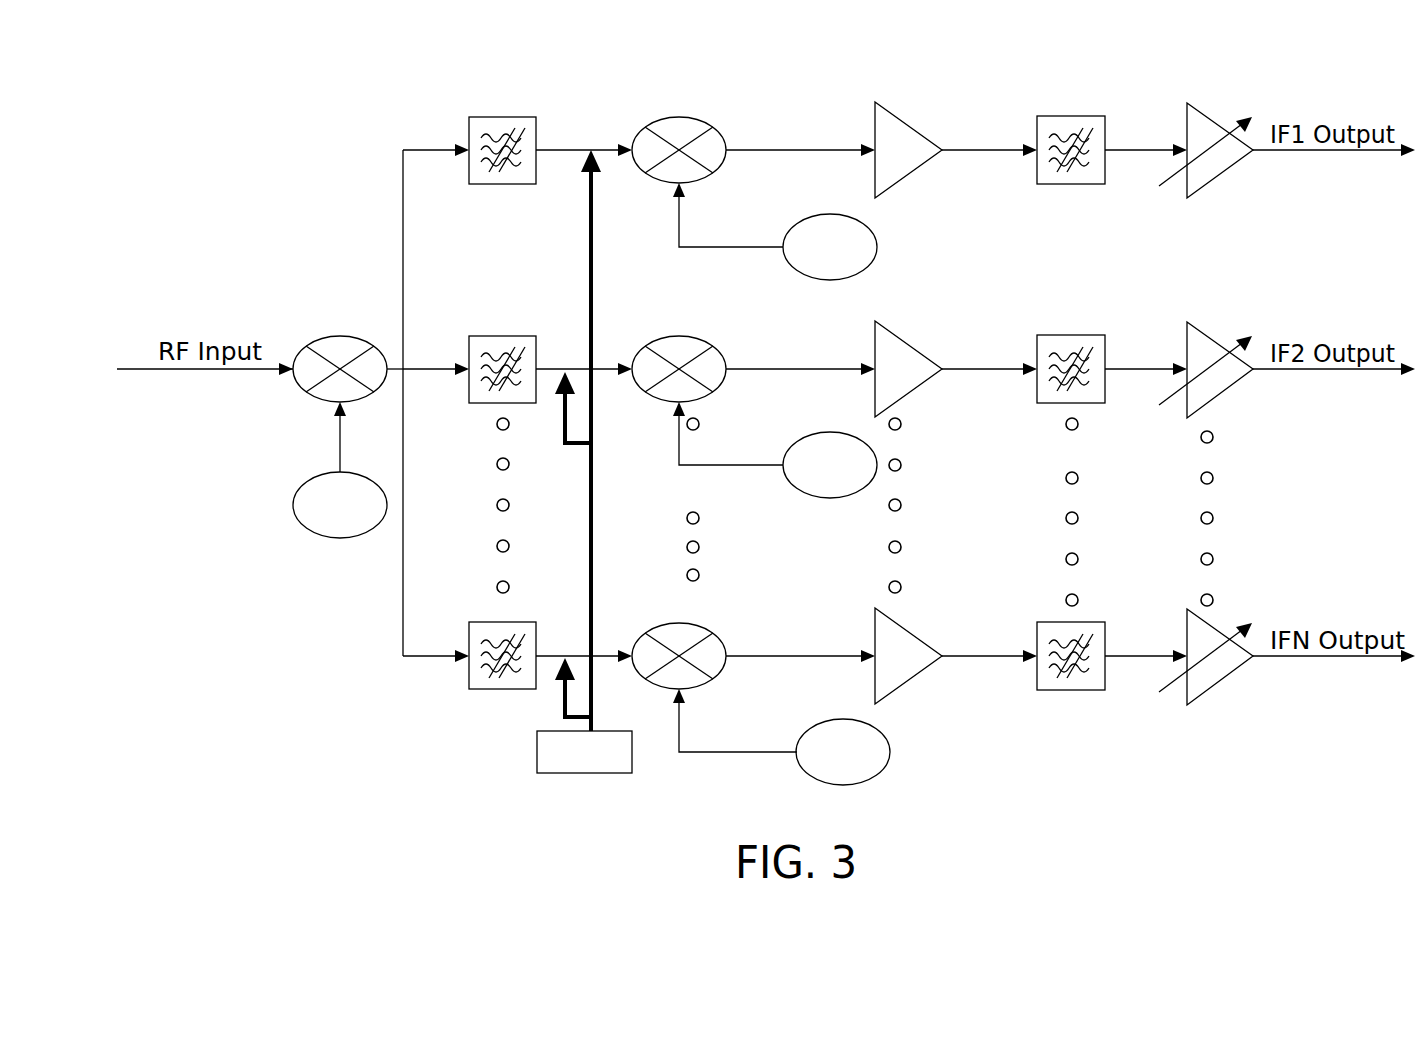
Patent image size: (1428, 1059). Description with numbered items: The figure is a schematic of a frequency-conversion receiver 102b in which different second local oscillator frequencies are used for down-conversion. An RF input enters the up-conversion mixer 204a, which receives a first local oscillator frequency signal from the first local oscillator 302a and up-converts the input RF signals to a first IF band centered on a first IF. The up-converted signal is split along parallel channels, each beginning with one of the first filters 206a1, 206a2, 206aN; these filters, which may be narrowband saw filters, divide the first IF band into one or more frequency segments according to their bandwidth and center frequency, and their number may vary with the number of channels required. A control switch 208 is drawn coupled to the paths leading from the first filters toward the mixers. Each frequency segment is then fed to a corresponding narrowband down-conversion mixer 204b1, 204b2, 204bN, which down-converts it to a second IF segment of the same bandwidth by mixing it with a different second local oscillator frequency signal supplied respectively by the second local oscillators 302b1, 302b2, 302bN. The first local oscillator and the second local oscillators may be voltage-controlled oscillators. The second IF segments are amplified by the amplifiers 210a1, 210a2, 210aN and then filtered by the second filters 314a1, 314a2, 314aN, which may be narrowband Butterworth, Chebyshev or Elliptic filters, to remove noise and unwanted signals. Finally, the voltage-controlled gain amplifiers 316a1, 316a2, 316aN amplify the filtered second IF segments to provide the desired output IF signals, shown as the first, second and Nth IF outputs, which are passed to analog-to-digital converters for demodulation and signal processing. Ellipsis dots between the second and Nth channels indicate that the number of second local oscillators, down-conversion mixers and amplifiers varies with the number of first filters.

The frequency-conversion receiver 102b is at (231, 688).
The up-conversion mixer 204a is at (340, 336).
The first local oscillator 302a is at (340, 538).
The first filter 206a1 is at (500, 117).
The first filter 206a2 is at (500, 336).
The first filter 206aN is at (500, 622).
The control switch 208 is at (537, 750).
The down-conversion mixer 204b1 is at (645, 120).
The down-conversion mixer 204b2 is at (645, 339).
The down-conversion mixer 204bN is at (645, 626).
The second local oscillator 302b1 is at (800, 223).
The second local oscillator 302b2 is at (803, 435).
The second local oscillator 302bN is at (808, 728).
The amplifier 210a1 is at (885, 105).
The amplifier 210a2 is at (885, 324).
The amplifier 210aN is at (885, 611).
The second filter 314a1 is at (1075, 184).
The second filter 314a2 is at (1068, 403).
The second filter 314aN is at (1068, 690).
The voltage-controlled gain amplifier 316a1 is at (1218, 174).
The voltage-controlled gain amplifier 316a2 is at (1218, 393).
The voltage-controlled gain amplifier 316aN is at (1218, 680).